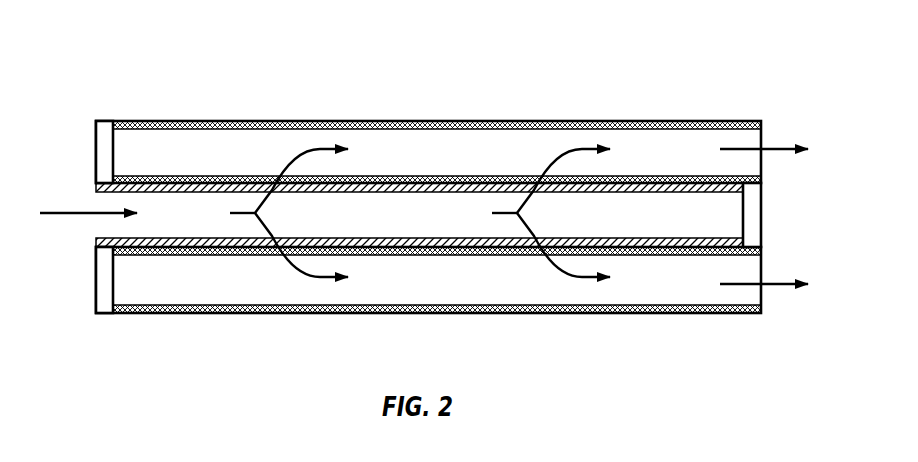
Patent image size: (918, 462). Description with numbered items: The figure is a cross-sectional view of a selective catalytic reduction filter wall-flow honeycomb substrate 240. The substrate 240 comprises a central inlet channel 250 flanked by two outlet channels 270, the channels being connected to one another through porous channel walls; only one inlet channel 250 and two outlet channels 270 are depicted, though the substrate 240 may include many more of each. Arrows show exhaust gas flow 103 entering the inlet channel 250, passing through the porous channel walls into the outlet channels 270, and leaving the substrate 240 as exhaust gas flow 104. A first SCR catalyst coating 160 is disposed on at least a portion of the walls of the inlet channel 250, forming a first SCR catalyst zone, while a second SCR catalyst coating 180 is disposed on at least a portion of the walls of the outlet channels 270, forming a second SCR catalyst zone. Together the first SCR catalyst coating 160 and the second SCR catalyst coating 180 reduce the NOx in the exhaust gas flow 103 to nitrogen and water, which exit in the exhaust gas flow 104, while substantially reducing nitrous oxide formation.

The wall-flow honeycomb substrate 240 is at (162, 74).
The second SCR catalyst coating 180 is at (207, 130).
The first SCR catalyst coating 160 is at (177, 193).
The inlet channel 250 is at (437, 215).
The outlet channels 270 is at (420, 215).
The exhaust gas flow 103 is at (56, 208).
The exhaust gas flow 104 is at (770, 145).